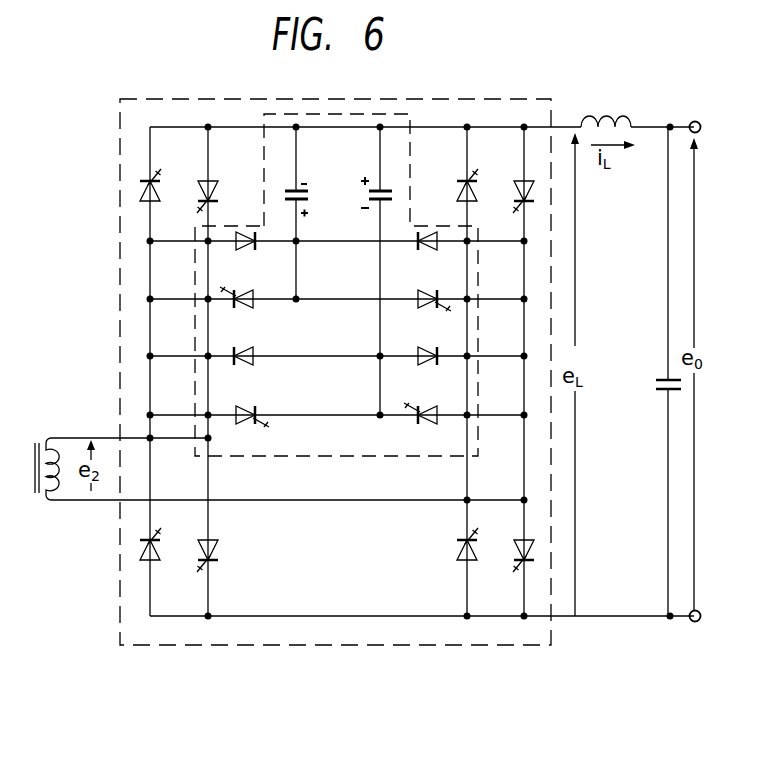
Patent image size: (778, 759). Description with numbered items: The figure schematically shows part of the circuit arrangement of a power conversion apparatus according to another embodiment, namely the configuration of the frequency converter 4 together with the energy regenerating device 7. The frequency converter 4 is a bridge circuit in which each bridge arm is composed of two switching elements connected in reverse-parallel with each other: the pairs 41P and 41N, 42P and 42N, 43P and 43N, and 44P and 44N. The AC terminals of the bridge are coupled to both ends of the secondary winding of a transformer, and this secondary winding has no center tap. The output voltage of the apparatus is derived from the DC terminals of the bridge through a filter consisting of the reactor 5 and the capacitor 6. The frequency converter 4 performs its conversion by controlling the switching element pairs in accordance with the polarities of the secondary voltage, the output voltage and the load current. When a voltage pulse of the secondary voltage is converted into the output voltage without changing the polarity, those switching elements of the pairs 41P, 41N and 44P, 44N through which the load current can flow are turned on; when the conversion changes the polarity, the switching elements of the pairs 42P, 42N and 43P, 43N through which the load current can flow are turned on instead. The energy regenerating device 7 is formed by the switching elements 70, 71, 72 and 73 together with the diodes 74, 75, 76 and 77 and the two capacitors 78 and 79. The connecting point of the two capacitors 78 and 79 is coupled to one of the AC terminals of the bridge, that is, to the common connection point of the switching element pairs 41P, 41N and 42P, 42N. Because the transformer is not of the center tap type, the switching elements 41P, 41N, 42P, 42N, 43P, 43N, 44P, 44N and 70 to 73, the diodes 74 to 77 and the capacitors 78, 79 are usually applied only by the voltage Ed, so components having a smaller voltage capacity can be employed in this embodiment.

The frequency converter 4 is at (507, 94).
The reactor 5 is at (618, 113).
The capacitor 6 is at (653, 382).
The energy regenerating device 7 is at (334, 460).
The switching element 41P is at (158, 194).
The switching element 41N is at (216, 193).
The switching element 42N is at (157, 550).
The switching element 42P is at (214, 554).
The switching element 43N is at (455, 192).
The switching element 43P is at (512, 192).
The switching element 44P is at (453, 553).
The switching element 44N is at (511, 544).
The switching element 70 is at (248, 306).
The switching element 71 is at (418, 306).
The switching element 72 is at (247, 421).
The switching element 73 is at (418, 422).
The diode 74 is at (245, 248).
The diode 75 is at (422, 248).
The diode 76 is at (248, 363).
The diode 77 is at (418, 363).
The capacitor 78 is at (286, 187).
The capacitor 79 is at (385, 187).